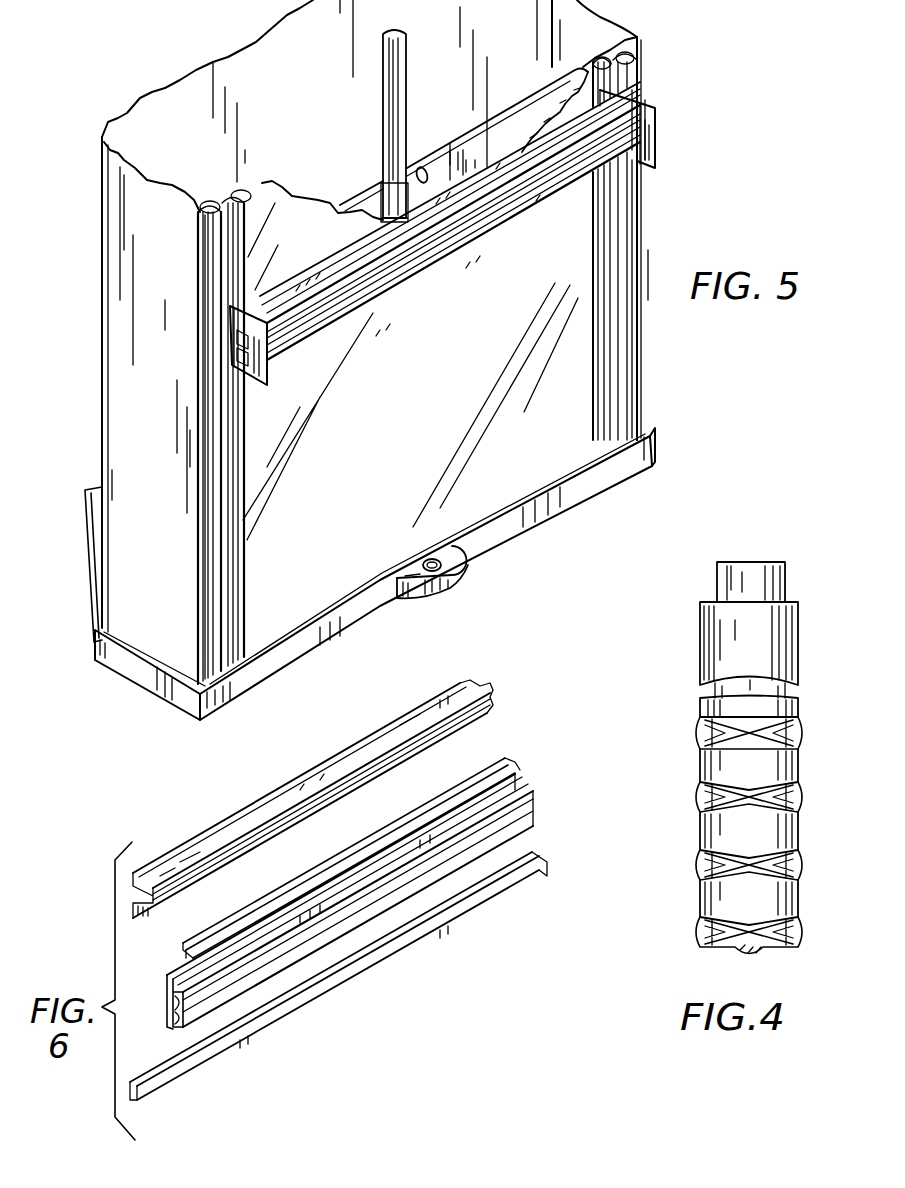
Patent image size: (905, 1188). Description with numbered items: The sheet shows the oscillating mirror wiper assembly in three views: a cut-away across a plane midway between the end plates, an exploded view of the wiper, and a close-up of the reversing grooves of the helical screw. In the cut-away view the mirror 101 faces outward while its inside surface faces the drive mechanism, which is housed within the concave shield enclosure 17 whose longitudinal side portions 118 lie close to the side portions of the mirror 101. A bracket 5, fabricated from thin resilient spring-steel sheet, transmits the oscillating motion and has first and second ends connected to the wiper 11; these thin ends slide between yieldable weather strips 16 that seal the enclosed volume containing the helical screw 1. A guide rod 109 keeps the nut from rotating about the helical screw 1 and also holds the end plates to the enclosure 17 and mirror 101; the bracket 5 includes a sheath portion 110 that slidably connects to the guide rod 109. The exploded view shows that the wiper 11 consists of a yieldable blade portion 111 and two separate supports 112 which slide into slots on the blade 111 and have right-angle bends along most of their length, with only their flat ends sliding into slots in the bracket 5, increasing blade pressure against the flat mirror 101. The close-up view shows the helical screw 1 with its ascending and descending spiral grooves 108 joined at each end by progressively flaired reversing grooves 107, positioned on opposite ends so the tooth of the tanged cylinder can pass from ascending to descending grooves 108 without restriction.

In FIG. 4, the helical screw 1 is at (719, 758).
In FIG. 5, the bracket 5 is at (508, 150).
In FIG. 5, the wiper 11 is at (450, 221).
In FIG. 6, the wiper 11 is at (350, 893).
In FIG. 5, the yieldable weather strips 16 is at (605, 232).
In FIG. 5, the concave shield enclosure 17 is at (151, 544).
In FIG. 5, the mirror 101 is at (413, 422).
In FIG. 4, the reversing grooves 107 is at (745, 684).
In FIG. 4, the ascending and descending spiral grooves 108 is at (730, 862).
In FIG. 5, the guide rod 109 is at (407, 80).
In FIG. 5, the sheath portion 110 is at (407, 167).
In FIG. 5, the blade portion 111 is at (412, 256).
In FIG. 6, the blade portion 111 is at (295, 890).
In FIG. 5, the supports 112 is at (348, 257).
In FIG. 6, the supports 112 is at (247, 815).
In FIG. 5, the longitudinal side portions 118 is at (208, 598).